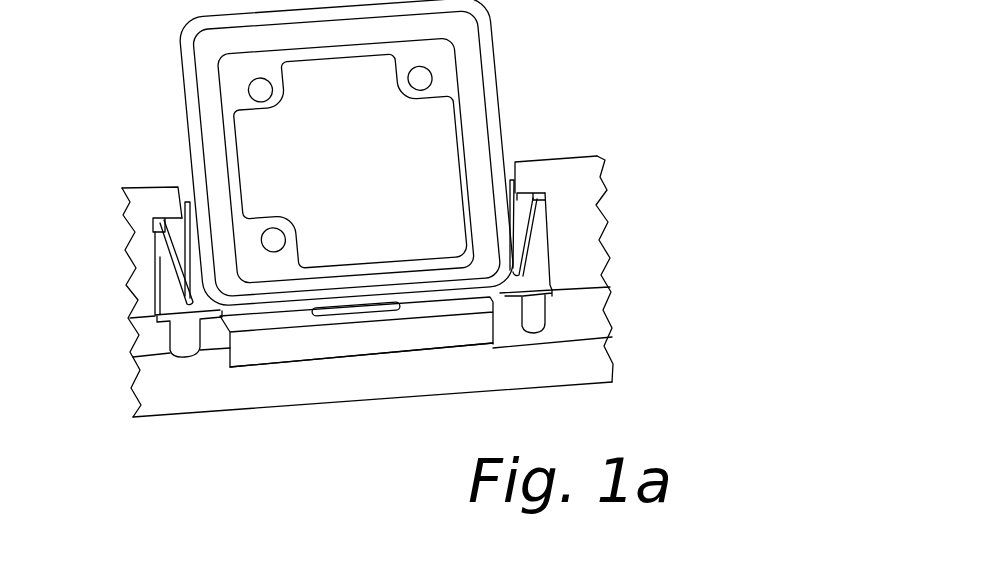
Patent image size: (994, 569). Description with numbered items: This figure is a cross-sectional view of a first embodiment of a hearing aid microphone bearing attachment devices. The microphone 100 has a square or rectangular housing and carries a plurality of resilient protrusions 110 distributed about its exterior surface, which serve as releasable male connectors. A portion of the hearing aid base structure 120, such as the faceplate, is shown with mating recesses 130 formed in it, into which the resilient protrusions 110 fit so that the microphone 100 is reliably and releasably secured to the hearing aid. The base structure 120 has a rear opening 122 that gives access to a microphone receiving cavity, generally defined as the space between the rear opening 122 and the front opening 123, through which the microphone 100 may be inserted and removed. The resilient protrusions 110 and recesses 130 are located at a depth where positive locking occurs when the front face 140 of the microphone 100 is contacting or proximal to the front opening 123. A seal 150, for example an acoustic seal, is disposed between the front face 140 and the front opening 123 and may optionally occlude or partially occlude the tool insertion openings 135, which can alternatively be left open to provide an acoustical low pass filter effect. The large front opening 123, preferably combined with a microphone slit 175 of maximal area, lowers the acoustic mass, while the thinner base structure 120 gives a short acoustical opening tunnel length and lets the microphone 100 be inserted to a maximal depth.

The microphone 100 is at (364, 173).
The resilient protrusions 110 is at (160, 256).
The hearing aid base structure 120 is at (573, 163).
The rear opening 122 is at (181, 177).
The front opening 123 is at (353, 348).
The recesses 130 is at (168, 288).
The tool insertion openings 135 is at (182, 347).
The front face 140 is at (271, 318).
The seal 150 is at (177, 322).
The microphone slit 175 is at (393, 325).